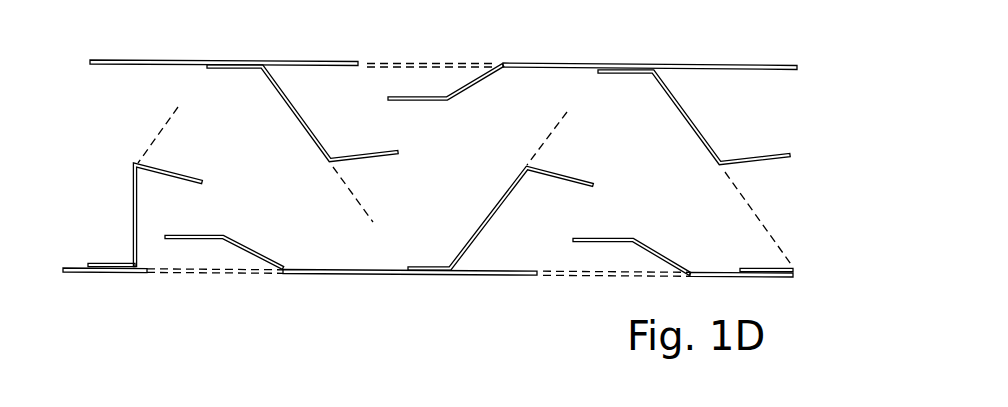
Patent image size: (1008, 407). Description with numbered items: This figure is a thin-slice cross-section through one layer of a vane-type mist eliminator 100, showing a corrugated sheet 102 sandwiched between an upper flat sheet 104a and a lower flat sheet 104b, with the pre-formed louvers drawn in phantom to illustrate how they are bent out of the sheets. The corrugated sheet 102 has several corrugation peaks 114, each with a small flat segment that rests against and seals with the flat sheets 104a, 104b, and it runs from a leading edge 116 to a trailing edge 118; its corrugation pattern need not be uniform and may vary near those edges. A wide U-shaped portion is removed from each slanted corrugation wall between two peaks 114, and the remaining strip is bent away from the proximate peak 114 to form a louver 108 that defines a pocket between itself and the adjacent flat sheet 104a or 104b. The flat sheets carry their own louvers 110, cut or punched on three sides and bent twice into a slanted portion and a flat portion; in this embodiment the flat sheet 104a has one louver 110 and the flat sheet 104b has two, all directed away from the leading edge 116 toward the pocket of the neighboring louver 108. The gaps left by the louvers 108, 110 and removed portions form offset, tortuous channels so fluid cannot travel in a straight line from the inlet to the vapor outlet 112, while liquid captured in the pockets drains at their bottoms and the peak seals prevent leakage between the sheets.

The heat sink / fin structure 100 is at (163, 290).
The corrugated sheet 102 is at (133, 170).
The flat sheet 104a is at (167, 60).
The flat sheet 104b is at (333, 275).
The louver 108 is at (184, 172).
The louver 110 is at (217, 237).
The vapor outlet 112 is at (113, 133).
The corrugation peak 114 is at (243, 63).
The leading edge 116 is at (797, 68).
The trailing edge 118 is at (90, 61).